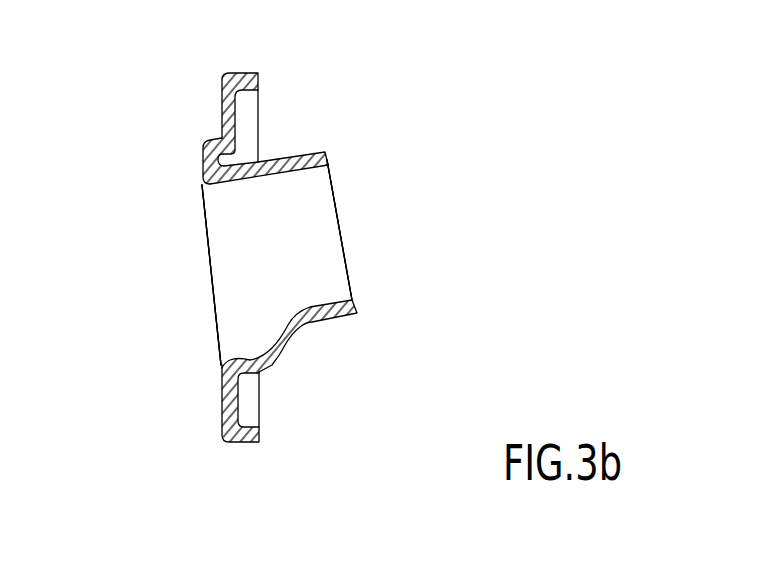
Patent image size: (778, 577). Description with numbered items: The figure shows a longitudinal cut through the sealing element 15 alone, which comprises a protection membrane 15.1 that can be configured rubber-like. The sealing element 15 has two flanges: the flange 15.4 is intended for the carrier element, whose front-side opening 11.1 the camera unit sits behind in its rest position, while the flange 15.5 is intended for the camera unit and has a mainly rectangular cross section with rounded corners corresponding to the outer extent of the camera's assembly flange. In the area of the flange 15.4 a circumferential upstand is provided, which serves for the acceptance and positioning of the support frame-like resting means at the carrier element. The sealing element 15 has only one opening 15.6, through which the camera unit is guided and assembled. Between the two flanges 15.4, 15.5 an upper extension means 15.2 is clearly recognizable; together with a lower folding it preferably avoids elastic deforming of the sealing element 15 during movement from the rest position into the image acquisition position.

The sealing element 15 is at (156, 103).
The protection membrane 15.1 is at (300, 273).
The extension means 15.2 is at (198, 170).
The flange 15.4 is at (245, 112).
The flange 15.5 is at (308, 153).
The opening 15.6 is at (315, 217).
The opening 11.1 is at (190, 268).